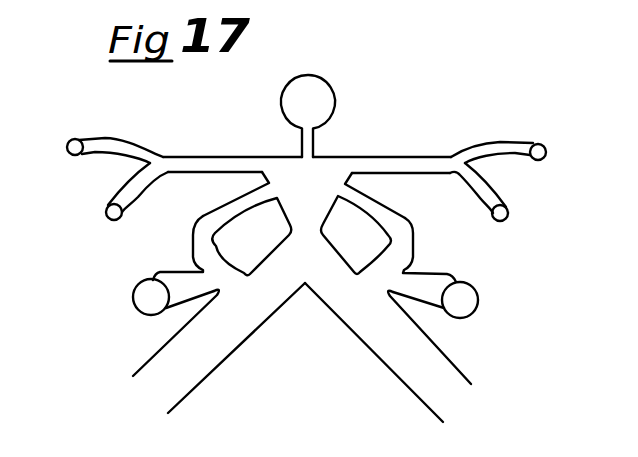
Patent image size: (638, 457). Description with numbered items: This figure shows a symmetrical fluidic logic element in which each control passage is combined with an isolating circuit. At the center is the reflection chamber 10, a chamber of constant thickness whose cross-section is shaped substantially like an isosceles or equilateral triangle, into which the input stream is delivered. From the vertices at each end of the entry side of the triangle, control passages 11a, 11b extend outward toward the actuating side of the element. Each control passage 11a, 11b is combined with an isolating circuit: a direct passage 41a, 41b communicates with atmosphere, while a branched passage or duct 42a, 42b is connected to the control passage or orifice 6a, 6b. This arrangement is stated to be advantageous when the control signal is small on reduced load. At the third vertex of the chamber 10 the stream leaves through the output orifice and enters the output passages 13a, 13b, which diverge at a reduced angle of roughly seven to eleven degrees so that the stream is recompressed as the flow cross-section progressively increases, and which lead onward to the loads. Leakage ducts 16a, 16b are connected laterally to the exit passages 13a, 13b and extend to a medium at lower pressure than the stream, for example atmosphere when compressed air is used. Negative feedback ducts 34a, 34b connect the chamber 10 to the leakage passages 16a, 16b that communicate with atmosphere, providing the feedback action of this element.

The reflection chamber 10 is at (301, 175).
The control passage 11a is at (210, 163).
The control passage 11b is at (392, 163).
The branched passage 42a is at (126, 146).
The branched passage 42b is at (498, 148).
The control passage or orifice 6a is at (75, 138).
The control passage or orifice 6b is at (543, 148).
The direct passage 41a is at (117, 188).
The direct passage 41b is at (495, 198).
The negative feedback duct 34a is at (208, 226).
The negative feedback duct 34b is at (396, 229).
The leakage duct 16a is at (176, 289).
The leakage duct 16b is at (432, 283).
The output passage 13a is at (222, 347).
The output passage 13b is at (383, 343).